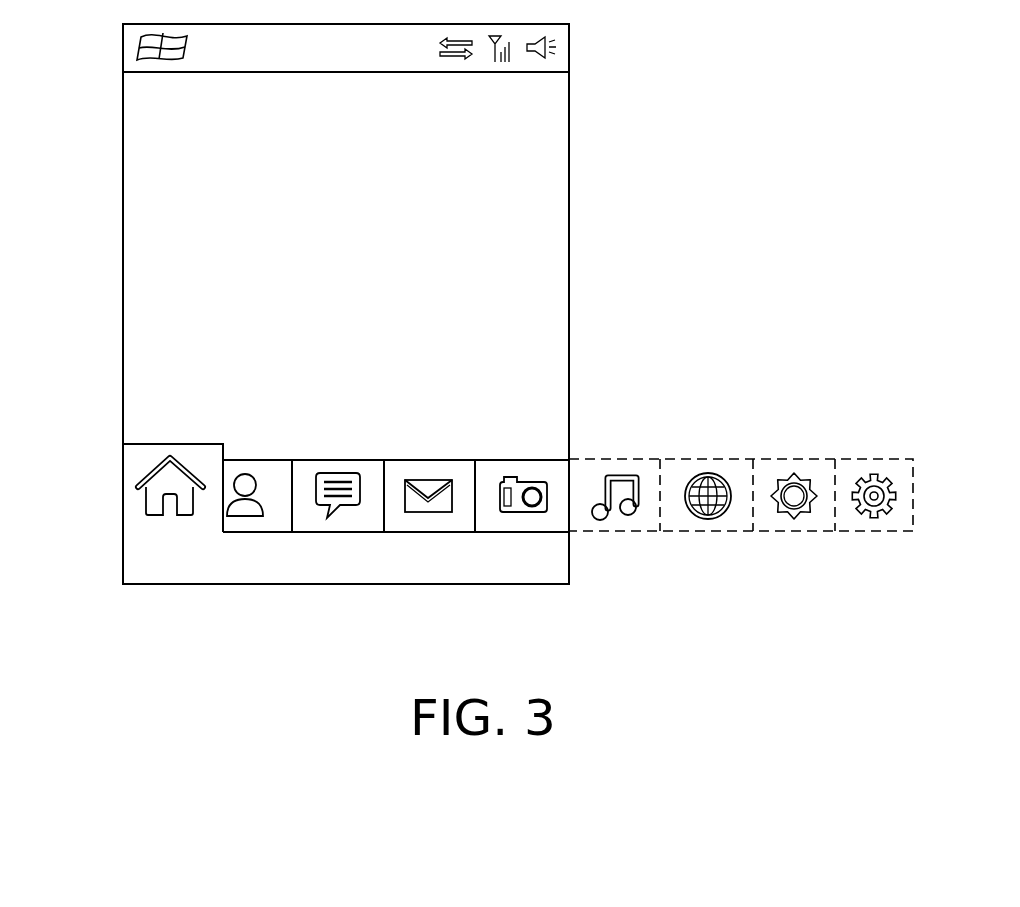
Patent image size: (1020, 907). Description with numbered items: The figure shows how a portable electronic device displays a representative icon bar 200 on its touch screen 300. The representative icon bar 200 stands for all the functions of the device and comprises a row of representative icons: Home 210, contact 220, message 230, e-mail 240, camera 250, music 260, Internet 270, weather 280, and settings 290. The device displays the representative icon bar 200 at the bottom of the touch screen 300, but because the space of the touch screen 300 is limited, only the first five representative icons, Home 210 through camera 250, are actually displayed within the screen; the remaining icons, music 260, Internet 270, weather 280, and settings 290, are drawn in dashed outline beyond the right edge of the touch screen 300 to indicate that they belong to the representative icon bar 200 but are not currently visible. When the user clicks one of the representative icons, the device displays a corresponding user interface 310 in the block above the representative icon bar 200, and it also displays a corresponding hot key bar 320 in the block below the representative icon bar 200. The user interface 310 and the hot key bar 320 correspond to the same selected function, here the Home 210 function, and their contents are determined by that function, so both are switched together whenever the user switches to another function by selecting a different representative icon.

The representative icon bar 200 is at (557, 522).
The Home 210 is at (168, 443).
The contact 220 is at (258, 460).
The message 230 is at (351, 460).
The e-mail 240 is at (444, 460).
The camera 250 is at (537, 460).
The music 260 is at (620, 459).
The Internet 270 is at (713, 459).
The weather 280 is at (793, 459).
The settings 290 is at (873, 459).
The touch screen 300 is at (569, 184).
The user interface 310 is at (547, 260).
The hot key bar 320 is at (562, 568).